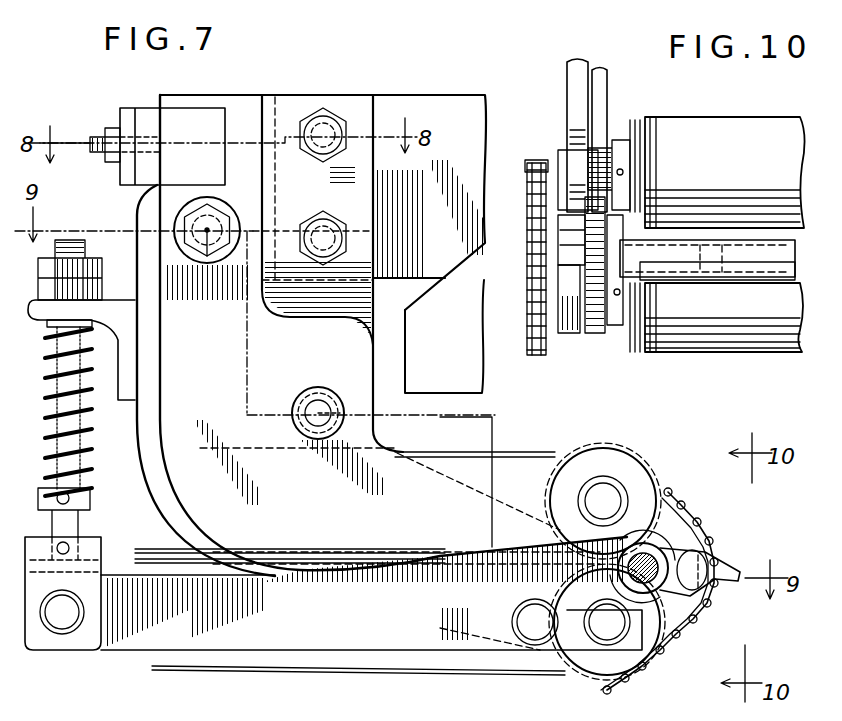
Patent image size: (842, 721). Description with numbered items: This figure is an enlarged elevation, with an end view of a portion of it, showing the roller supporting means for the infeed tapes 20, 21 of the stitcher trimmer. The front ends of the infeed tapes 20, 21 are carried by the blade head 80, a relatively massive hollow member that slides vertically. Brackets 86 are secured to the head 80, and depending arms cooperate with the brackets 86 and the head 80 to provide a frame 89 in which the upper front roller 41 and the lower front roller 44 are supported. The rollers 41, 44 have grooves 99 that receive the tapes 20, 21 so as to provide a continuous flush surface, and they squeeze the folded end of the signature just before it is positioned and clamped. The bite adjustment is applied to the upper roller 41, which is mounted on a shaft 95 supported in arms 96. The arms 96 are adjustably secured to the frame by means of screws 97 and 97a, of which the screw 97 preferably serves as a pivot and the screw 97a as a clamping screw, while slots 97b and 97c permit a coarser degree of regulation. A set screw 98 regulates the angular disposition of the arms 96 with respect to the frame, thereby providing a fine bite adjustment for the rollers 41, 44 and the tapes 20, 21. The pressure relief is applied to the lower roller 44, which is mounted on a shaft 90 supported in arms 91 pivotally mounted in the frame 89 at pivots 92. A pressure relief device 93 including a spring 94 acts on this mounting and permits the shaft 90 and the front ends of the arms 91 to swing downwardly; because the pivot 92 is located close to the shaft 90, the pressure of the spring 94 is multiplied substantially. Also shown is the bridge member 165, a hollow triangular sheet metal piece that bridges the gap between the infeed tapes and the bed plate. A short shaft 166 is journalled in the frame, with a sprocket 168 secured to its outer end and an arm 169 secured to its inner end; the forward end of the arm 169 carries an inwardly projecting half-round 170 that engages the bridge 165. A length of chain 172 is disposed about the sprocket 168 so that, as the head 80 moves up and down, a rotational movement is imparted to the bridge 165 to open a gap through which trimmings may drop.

In FIG. 7, the infeed tape 20 is at (158, 548).
In FIG. 7, the infeed tape 21 is at (186, 673).
In FIG. 7, the upper front roller 41 is at (610, 463).
In FIG. 10, the upper front roller 41 is at (732, 122).
In FIG. 7, the lower front roller 44 is at (600, 630).
In FIG. 10, the lower front roller 44 is at (728, 342).
In FIG. 7, the blade head 80 is at (462, 352).
In FIG. 7, the bracket 86 is at (434, 108).
In FIG. 7, the frame 89 is at (146, 222).
In FIG. 10, the frame 89 is at (596, 336).
In FIG. 7, the shaft 90 is at (570, 640).
In FIG. 10, the shaft 90 is at (617, 327).
In FIG. 7, the arm 91 is at (374, 650).
In FIG. 10, the arm 91 is at (575, 336).
In FIG. 7, the pivot 92 is at (522, 612).
In FIG. 7, the pressure relief device 93 is at (100, 473).
In FIG. 7, the spring 94 is at (92, 418).
In FIG. 7, the shaft 95 is at (608, 490).
In FIG. 10, the shaft 95 is at (613, 152).
In FIG. 7, the arm 96 is at (218, 378).
In FIG. 10, the arm 96 is at (567, 88).
In FIG. 7, the screw 97 is at (314, 398).
In FIG. 7, the clamping screw 97a is at (207, 252).
In FIG. 7, the slot 97b is at (300, 422).
In FIG. 7, the slot 97c is at (278, 220).
In FIG. 7, the set screw 98 is at (93, 133).
In FIG. 7, the groove 99 is at (583, 458).
In FIG. 7, the bridge member 165 is at (718, 582).
In FIG. 10, the bridge member 165 is at (775, 268).
In FIG. 7, the short shaft 166 is at (680, 640).
In FIG. 7, the sprocket 168 is at (683, 520).
In FIG. 10, the sprocket 168 is at (541, 162).
In FIG. 7, the arm 169 is at (682, 549).
In FIG. 10, the arm 169 is at (648, 245).
In FIG. 7, the half-round 170 is at (710, 560).
In FIG. 10, the half-round 170 is at (705, 278).
In FIG. 7, the chain 172 is at (632, 684).
In FIG. 10, the chain 172 is at (535, 360).